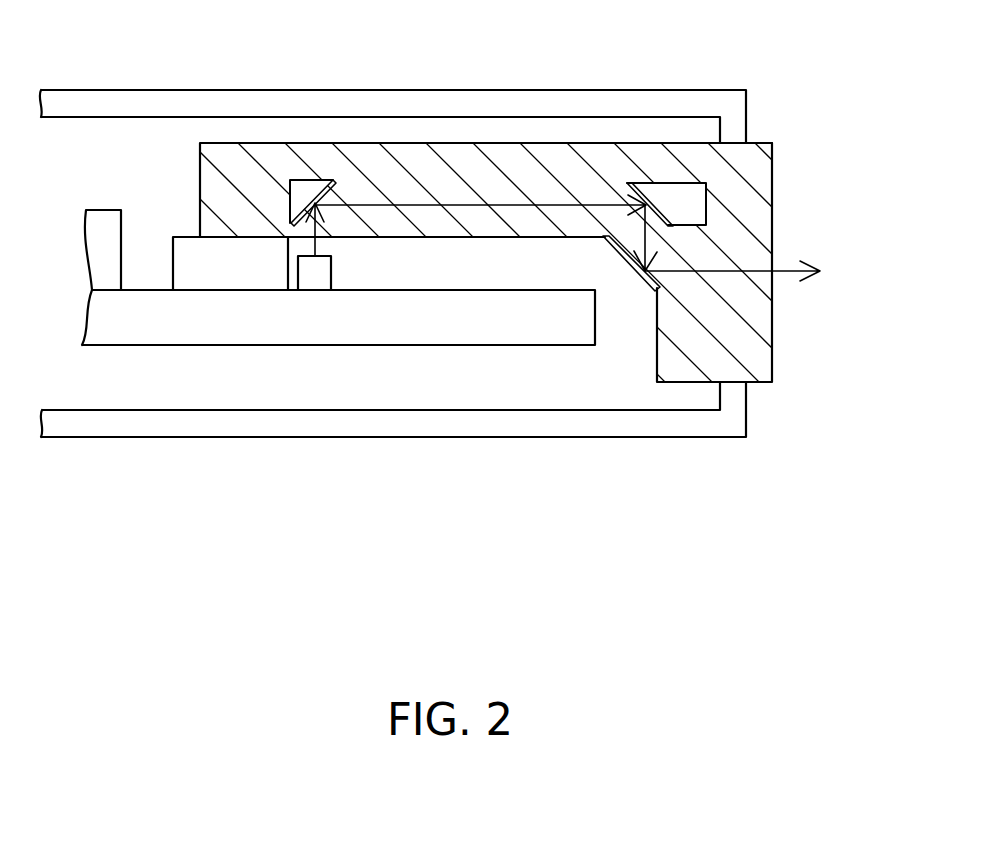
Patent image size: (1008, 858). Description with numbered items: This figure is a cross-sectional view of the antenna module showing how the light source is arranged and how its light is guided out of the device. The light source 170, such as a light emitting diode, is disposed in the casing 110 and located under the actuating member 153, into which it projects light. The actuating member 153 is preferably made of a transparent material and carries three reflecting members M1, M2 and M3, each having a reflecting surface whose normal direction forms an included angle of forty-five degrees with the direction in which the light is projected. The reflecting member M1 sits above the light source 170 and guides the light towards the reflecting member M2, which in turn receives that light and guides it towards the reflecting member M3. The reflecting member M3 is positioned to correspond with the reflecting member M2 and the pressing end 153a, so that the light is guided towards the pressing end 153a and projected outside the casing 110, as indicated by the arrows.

The casing 110 is at (67, 100).
The actuating member 153 is at (410, 122).
The pressing end 153a is at (763, 158).
The reflecting member M1 is at (289, 185).
The reflecting member M2 is at (641, 189).
The reflecting member M3 is at (630, 265).
The light source 170 is at (320, 285).